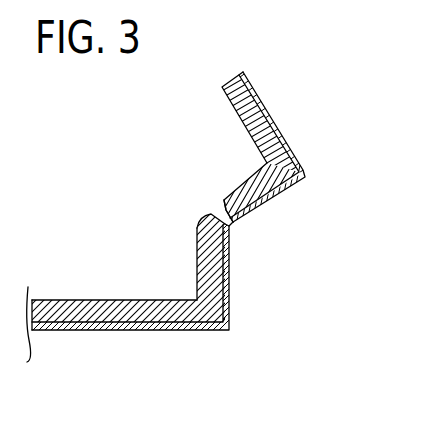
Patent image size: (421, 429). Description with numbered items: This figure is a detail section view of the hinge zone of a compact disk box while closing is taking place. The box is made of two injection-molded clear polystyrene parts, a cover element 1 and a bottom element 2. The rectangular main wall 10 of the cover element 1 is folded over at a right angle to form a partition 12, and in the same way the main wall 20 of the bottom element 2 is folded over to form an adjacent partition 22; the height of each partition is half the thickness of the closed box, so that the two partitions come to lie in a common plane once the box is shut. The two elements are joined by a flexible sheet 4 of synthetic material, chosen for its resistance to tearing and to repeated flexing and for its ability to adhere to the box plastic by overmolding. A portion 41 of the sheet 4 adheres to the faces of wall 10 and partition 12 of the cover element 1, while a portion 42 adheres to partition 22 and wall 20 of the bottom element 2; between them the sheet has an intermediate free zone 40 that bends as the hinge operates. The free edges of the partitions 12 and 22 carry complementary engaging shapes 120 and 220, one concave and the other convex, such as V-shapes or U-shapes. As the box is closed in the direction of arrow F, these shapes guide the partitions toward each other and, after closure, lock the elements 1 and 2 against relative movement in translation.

The cover element 1 is at (174, 299).
The main wall of the cover element 10 is at (68, 300).
The partition of the cover element 12 is at (210, 290).
The engaging shape of partition 12 120 is at (198, 226).
The flexible sheet 4 is at (86, 335).
The sheet portion adhering to the cover element 41 is at (133, 332).
The bottom element 2 is at (261, 146).
The main wall of the bottom element 20 is at (237, 122).
The partition of the bottom element 22 is at (272, 200).
The engaging shape of partition 22 220 is at (222, 207).
The intermediate free zone of the sheet 40 is at (231, 236).
The sheet portion adhering to the bottom element 42 is at (290, 142).
The closure arrow F is at (293, 85).